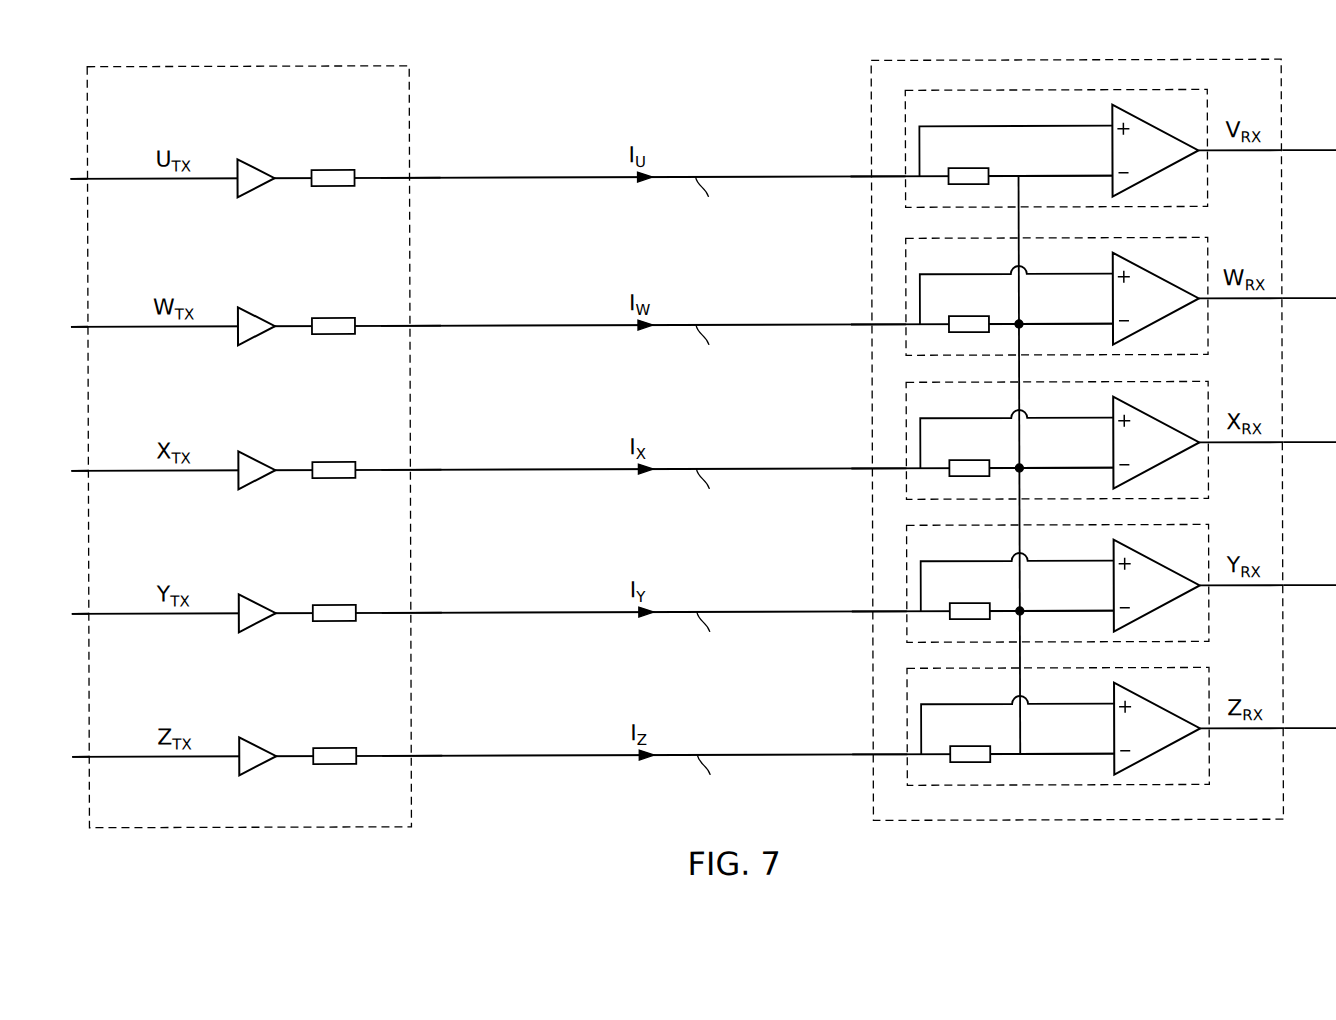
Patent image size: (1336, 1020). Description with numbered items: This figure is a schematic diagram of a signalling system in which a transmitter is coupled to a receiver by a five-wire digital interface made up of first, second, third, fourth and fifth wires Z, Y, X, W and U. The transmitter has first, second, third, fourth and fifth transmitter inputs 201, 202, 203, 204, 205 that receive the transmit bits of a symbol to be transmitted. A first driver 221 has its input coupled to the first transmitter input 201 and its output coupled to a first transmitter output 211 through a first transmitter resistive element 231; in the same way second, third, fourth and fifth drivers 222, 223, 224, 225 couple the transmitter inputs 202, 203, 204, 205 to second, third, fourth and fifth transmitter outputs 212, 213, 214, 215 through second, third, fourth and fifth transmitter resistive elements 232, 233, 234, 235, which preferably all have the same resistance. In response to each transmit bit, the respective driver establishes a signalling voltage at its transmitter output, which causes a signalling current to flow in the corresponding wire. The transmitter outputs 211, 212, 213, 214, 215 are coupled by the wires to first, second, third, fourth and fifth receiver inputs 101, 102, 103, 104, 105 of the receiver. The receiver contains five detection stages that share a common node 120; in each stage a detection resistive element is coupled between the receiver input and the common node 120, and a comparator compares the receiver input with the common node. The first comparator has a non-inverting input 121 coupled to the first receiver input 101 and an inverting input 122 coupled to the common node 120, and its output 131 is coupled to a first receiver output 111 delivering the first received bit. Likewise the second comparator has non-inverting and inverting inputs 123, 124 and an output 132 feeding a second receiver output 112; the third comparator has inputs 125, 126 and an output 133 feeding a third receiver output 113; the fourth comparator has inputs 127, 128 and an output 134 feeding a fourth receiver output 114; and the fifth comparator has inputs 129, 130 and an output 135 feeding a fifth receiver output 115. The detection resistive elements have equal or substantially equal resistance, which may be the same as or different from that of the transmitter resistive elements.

The first receiver input 101 is at (848, 732).
The second receiver input 102 is at (848, 589).
The third receiver input 103 is at (847, 446).
The fourth receiver input 104 is at (847, 302).
The fifth receiver input 105 is at (846, 154).
The first receiver output 111 is at (1310, 703).
The second receiver output 112 is at (1310, 560).
The third receiver output 113 is at (1309, 417).
The fourth receiver output 114 is at (1309, 273).
The fifth receiver output 115 is at (1309, 125).
The common node 120 is at (1018, 471).
The first, non-inverting input 121 is at (1017, 714).
The second, inverting input 122 is at (1052, 738).
The first, non-inverting input 123 is at (1017, 571).
The second, inverting input 124 is at (1052, 595).
The first, non-inverting input 125 is at (1016, 428).
The second, inverting input 126 is at (1051, 452).
The first, non-inverting input 127 is at (1016, 284).
The second, inverting input 128 is at (1051, 308).
The first, non-inverting input 129 is at (1015, 136).
The second, inverting input 130 is at (1050, 160).
The output of the first comparator 131 is at (1242, 756).
The output of the second comparator 132 is at (1242, 613).
The output of the third comparator 133 is at (1241, 470).
The comparator output W 134 is at (1241, 326).
The comparator output U 135 is at (1240, 178).
The first transmitter input 201 is at (111, 711).
The second transmitter input 202 is at (111, 568).
The third transmitter input 203 is at (110, 425).
The fourth transmitter input 204 is at (110, 281).
The fifth transmitter input 205 is at (109, 133).
The first transmitter output 211 is at (426, 730).
The second transmitter output 212 is at (426, 587).
The third transmitter output 213 is at (425, 444).
The fourth transmitter output 214 is at (425, 300).
The fifth transmitter output 215 is at (424, 152).
The first driver 221 is at (273, 734).
The second driver 222 is at (273, 591).
The third driver 223 is at (272, 448).
The fourth driver 224 is at (272, 304).
The fifth driver 225 is at (271, 156).
The first transmitter resistive element 231 is at (342, 781).
The second transmitter resistive element 232 is at (342, 638).
The third transmitter resistive element 233 is at (341, 495).
The fourth transmitter resistive element 234 is at (341, 351).
The fifth transmitter resistive element 235 is at (341, 203).